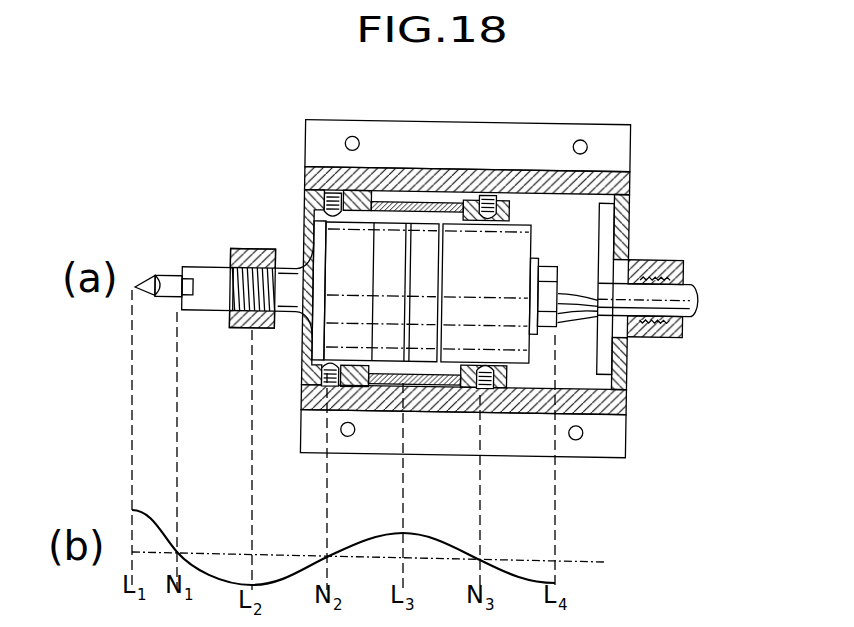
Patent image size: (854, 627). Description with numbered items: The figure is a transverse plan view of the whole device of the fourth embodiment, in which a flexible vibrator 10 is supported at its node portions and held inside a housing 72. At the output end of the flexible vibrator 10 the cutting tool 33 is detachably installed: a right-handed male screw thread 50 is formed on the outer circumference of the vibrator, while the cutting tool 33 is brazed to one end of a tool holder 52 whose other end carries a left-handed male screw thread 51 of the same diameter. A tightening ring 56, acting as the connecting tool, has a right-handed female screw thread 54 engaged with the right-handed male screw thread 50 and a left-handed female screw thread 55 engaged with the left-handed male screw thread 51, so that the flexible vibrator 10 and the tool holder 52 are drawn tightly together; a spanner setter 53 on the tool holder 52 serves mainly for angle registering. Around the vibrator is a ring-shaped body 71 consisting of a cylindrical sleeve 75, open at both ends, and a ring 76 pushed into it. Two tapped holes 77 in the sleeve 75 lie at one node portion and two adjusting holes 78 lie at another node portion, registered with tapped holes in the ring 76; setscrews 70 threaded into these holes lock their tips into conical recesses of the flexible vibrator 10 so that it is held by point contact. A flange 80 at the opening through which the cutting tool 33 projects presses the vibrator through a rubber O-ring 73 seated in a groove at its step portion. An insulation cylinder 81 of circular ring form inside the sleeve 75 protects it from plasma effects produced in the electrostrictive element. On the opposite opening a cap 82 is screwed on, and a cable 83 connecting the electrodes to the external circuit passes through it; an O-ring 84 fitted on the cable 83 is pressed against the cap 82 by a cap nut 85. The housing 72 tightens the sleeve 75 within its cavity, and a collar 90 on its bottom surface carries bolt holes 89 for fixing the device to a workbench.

The flexible vibrator 10 is at (508, 252).
The cutting tool 33 is at (147, 279).
The right-handed male screw thread 50 is at (280, 302).
The left-handed male screw thread 51 is at (227, 305).
The tool holder 52 is at (168, 275).
The spanner setter 53 is at (190, 278).
The right-handed female screw thread 54 is at (278, 267).
The left-handed female screw thread 55 is at (227, 268).
The tightening ring 56 is at (252, 252).
The setscrew 70 is at (330, 192).
The ring-shaped body 71 is at (398, 384).
The housing 72 is at (612, 440).
The O-ring 73 is at (313, 334).
The cylindrical sleeve 75 is at (303, 400).
The ring 76 is at (530, 392).
The tapped hole 77 is at (335, 388).
The adjusting hole 78 is at (488, 384).
The flange 80 is at (303, 358).
The insulation cylinder 81 is at (404, 200).
The cap 82 is at (612, 232).
The cable 83 is at (700, 301).
The O-ring 84 is at (688, 322).
The cap nut 85 is at (650, 338).
The bolt hole 89 is at (581, 141).
The collar 90 is at (622, 142).